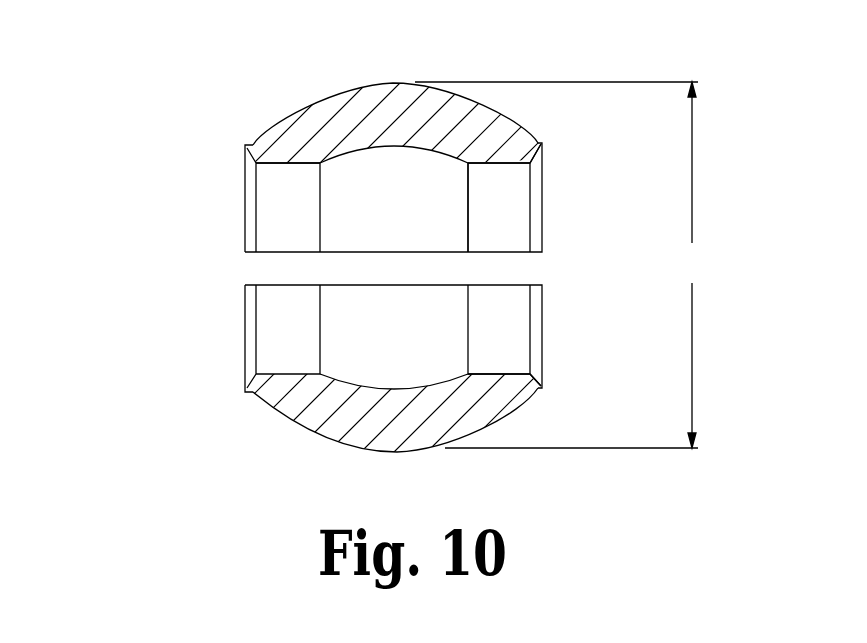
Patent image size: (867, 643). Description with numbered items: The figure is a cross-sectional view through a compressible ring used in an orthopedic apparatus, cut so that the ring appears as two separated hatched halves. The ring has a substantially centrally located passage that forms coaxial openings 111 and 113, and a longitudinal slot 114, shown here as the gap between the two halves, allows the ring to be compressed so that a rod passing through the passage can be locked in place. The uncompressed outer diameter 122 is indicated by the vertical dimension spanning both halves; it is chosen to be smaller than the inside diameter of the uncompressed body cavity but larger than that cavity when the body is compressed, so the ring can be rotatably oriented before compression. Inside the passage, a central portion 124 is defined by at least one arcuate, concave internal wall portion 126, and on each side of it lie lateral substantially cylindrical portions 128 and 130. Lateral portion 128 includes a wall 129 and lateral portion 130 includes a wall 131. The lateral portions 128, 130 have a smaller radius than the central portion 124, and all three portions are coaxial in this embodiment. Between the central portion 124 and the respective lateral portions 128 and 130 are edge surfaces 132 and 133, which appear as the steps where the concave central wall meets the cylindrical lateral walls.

The coaxial opening 111 is at (543, 201).
The coaxial opening 113 is at (244, 337).
The longitudinal slot 114 is at (245, 268).
The uncompressed outer diameter 122 is at (562, 265).
The central portion 124 is at (427, 355).
The arcuate internal wall portion 126 is at (416, 148).
The lateral substantially cylindrical portion 128 is at (268, 396).
The wall 129 is at (286, 163).
The lateral substantially cylindrical portion 130 is at (508, 353).
The wall 131 is at (505, 157).
The edge surface 132 is at (314, 163).
The edge surface 133 is at (468, 162).